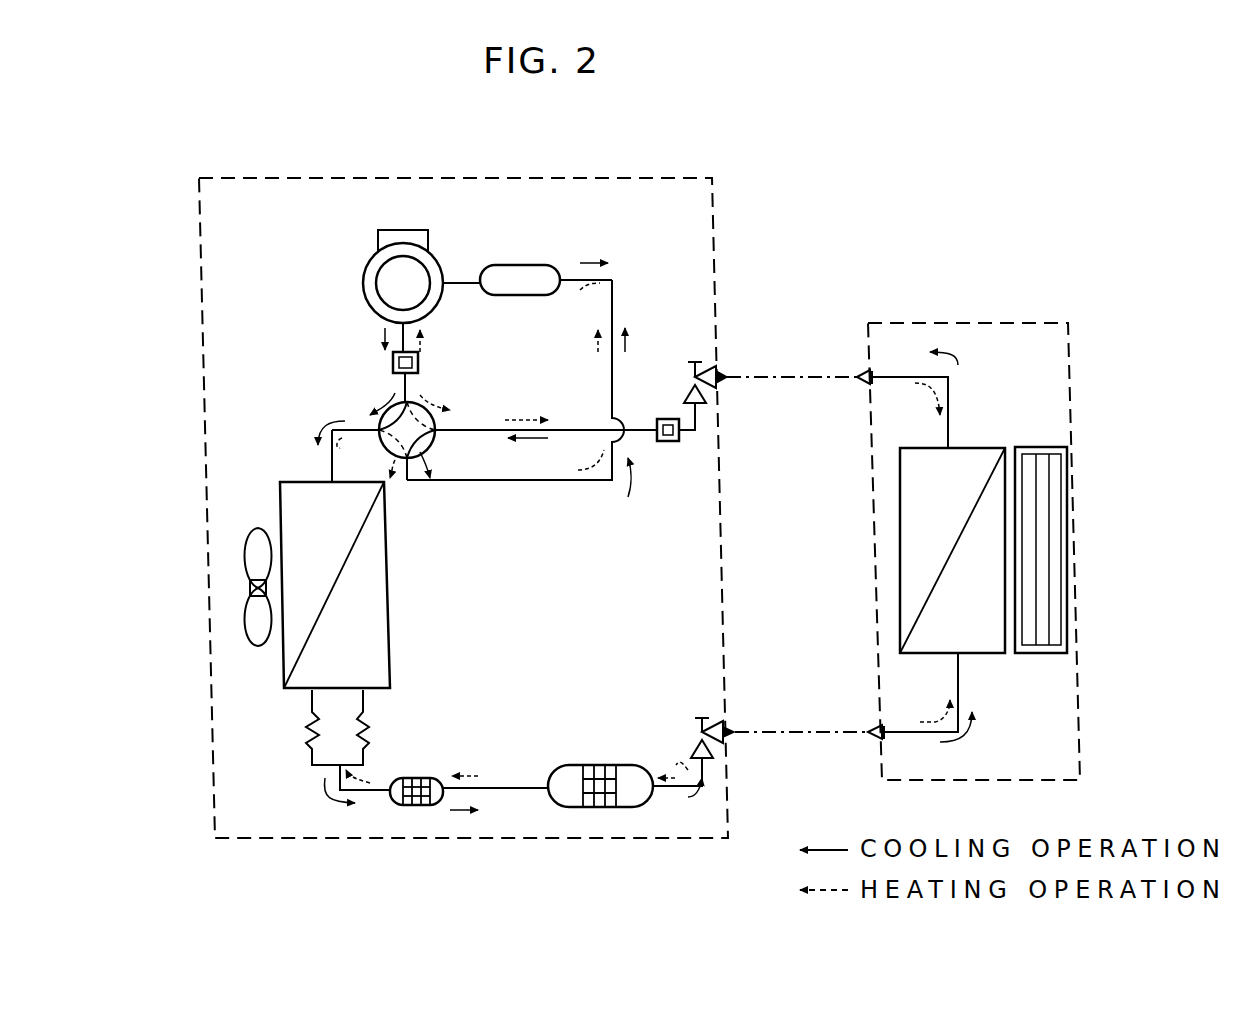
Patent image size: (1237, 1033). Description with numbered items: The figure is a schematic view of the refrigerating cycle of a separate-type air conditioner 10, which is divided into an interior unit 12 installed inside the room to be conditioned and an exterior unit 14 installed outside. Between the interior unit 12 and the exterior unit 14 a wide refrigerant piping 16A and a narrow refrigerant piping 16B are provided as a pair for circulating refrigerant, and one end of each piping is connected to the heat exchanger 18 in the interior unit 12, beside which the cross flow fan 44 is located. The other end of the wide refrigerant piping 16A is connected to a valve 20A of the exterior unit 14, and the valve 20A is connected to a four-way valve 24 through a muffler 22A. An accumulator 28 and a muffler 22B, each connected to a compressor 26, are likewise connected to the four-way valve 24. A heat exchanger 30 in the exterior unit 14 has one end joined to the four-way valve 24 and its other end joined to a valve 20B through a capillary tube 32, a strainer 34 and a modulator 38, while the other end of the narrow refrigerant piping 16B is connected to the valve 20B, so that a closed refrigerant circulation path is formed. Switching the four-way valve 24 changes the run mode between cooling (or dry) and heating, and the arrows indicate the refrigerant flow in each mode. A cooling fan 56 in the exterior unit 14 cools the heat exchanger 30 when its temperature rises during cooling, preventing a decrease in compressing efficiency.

The air conditioner 10 is at (888, 155).
The interior unit 12 is at (900, 323).
The exterior unit 14 is at (578, 177).
The wide refrigerant piping 16A is at (770, 373).
The narrow refrigerant piping 16B is at (795, 728).
The heat exchanger 18 is at (900, 522).
The valve 20A is at (700, 372).
The valve 20B is at (712, 720).
The muffler 22A is at (665, 441).
The muffler 22B is at (420, 363).
The four-way valve 24 is at (437, 420).
The compressor 26 is at (438, 266).
The accumulator 28 is at (530, 265).
The heat exchanger 30 is at (388, 600).
The capillary tube 32 is at (322, 730).
The strainer 34 is at (410, 778).
The modulator 38 is at (600, 765).
The cross flow fan 44 is at (1067, 496).
The cooling fan 56 is at (252, 530).